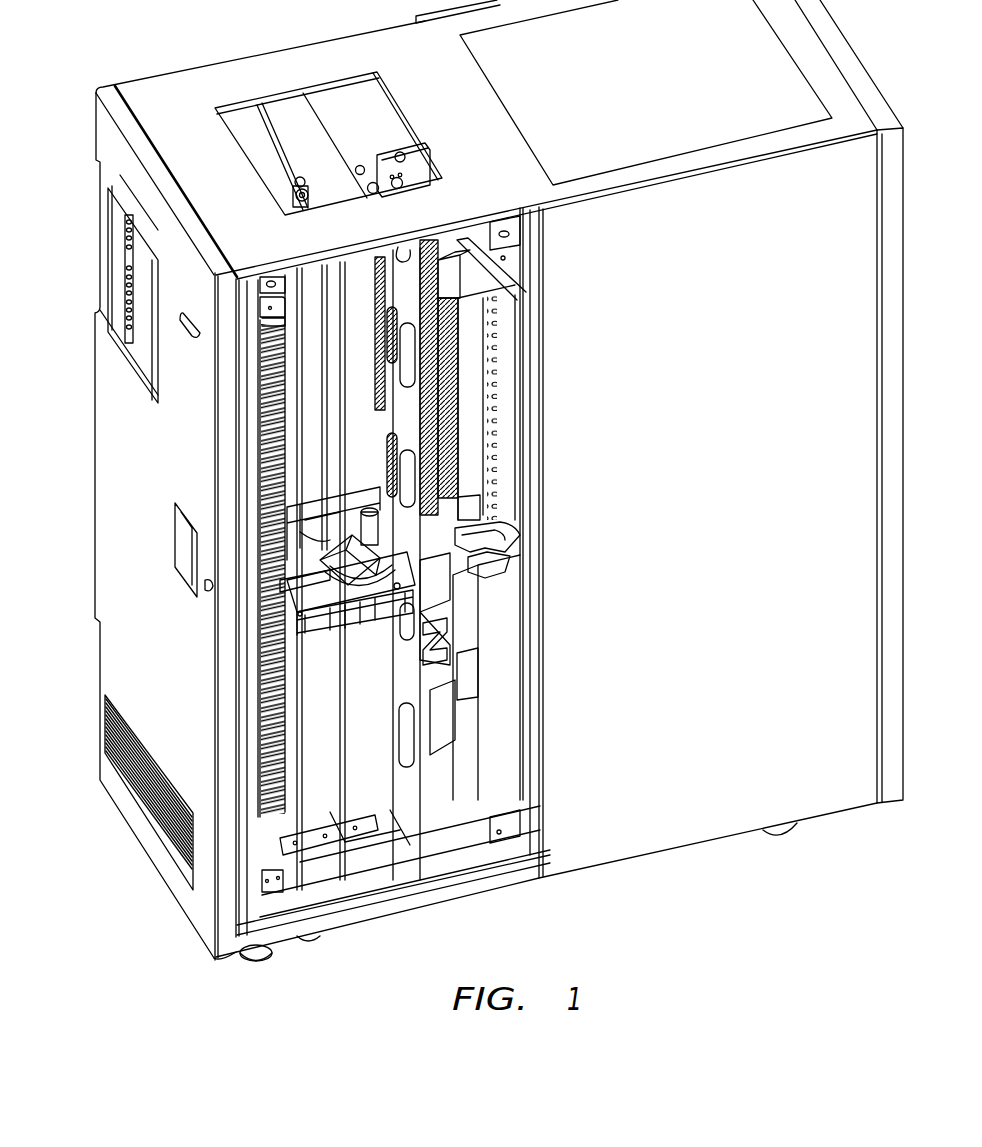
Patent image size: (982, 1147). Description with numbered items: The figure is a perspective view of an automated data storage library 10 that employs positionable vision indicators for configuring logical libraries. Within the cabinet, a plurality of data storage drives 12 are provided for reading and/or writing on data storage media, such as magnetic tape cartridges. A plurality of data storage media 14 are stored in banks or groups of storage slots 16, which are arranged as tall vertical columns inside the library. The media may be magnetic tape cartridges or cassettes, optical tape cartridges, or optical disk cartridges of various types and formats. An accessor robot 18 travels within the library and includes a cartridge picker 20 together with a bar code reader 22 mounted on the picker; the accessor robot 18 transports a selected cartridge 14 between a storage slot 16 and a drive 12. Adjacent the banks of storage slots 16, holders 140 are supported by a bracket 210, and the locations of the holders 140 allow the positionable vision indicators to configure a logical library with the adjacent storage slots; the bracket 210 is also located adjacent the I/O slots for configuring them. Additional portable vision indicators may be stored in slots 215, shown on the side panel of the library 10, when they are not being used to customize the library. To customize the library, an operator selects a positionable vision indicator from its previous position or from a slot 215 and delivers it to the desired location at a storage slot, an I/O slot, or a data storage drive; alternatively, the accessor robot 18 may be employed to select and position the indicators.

The automated media storage library 10 is at (285, 58).
The slots 215 is at (115, 250).
The data storage media 14 is at (262, 398).
The storage slots 16 is at (412, 423).
The bar code reader 22 is at (290, 515).
The cartridge picker 20 is at (455, 612).
The data storage drives 12 is at (460, 598).
The bracket 210 is at (487, 560).
The holders 140 is at (488, 540).
The accessor robot 18 is at (290, 843).